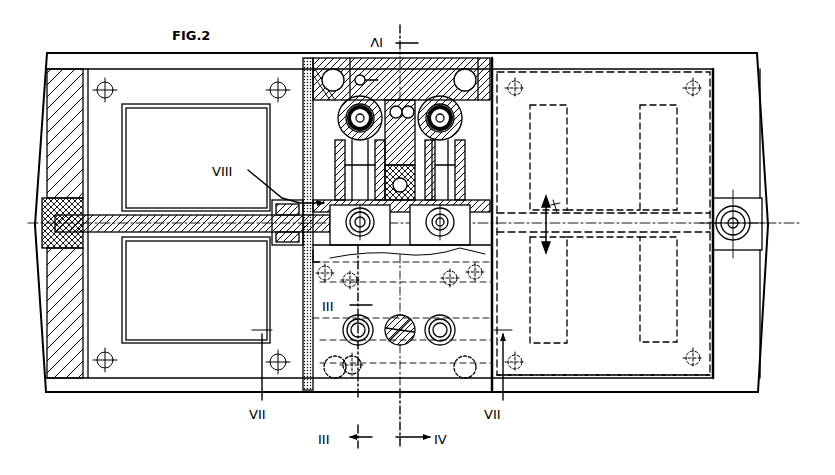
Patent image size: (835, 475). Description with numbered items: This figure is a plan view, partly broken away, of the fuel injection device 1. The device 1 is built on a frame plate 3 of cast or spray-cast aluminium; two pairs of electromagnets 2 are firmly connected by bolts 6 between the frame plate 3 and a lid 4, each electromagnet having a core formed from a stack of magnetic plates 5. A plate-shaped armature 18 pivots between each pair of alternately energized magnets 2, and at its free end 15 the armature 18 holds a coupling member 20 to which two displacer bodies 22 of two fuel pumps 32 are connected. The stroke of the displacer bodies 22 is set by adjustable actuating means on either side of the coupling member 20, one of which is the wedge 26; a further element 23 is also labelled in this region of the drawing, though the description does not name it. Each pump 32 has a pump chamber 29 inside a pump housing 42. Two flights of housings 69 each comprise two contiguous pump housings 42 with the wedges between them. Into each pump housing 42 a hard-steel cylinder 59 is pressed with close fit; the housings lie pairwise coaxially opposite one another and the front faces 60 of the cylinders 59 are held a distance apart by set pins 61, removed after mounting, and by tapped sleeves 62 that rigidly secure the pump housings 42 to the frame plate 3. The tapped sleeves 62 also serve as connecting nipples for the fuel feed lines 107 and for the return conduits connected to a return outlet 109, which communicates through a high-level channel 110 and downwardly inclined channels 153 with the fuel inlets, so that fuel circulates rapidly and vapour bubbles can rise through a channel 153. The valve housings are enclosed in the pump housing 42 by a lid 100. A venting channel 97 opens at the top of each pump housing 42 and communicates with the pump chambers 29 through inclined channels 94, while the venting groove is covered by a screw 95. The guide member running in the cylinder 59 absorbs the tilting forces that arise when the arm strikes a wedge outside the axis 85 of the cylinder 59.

The device 1 is at (733, 50).
The electromagnets 2 is at (217, 134).
The frame plate 3 is at (762, 92).
The lid 4 is at (588, 70).
The magnetic plates 5 is at (601, 378).
The bolts 6 is at (520, 80).
The free end 15 is at (278, 222).
The armature 18 is at (192, 233).
The coupling member 20 is at (340, 255).
The displacer bodies 22 is at (340, 142).
The fastening bolts 23 is at (340, 270).
The wedge 26 is at (448, 228).
The pump chamber 29 is at (338, 124).
The fuel pumps 32 is at (306, 118).
The pump housing 42 is at (308, 60).
The hard-steel cylinder 59 is at (335, 160).
The front faces 60 is at (503, 195).
The set pins 61 is at (352, 281).
The tapped sleeves 62 is at (333, 68).
The flights of housings 69 is at (314, 52).
The axis 85 is at (312, 262).
The inclined channels 94 is at (398, 106).
The screw 95 is at (385, 345).
The venting channel 97 is at (414, 106).
The lid 100 is at (372, 388).
The fuel feed lines 107 is at (492, 72).
The return outlet 109 is at (356, 60).
The high-level channel 110 is at (440, 70).
The inclined channels 153 is at (348, 353).